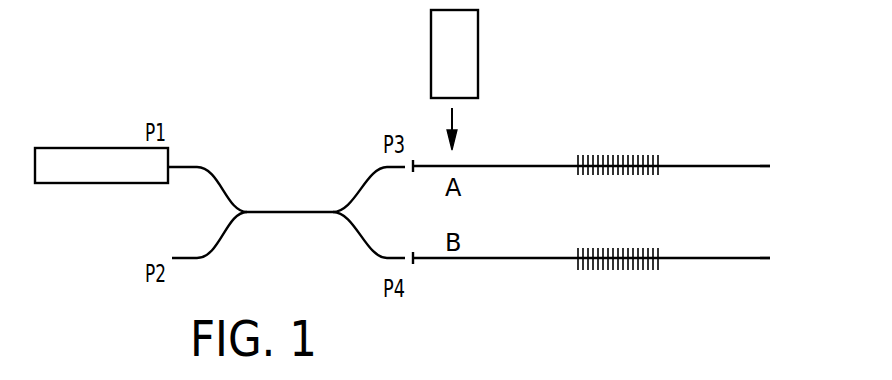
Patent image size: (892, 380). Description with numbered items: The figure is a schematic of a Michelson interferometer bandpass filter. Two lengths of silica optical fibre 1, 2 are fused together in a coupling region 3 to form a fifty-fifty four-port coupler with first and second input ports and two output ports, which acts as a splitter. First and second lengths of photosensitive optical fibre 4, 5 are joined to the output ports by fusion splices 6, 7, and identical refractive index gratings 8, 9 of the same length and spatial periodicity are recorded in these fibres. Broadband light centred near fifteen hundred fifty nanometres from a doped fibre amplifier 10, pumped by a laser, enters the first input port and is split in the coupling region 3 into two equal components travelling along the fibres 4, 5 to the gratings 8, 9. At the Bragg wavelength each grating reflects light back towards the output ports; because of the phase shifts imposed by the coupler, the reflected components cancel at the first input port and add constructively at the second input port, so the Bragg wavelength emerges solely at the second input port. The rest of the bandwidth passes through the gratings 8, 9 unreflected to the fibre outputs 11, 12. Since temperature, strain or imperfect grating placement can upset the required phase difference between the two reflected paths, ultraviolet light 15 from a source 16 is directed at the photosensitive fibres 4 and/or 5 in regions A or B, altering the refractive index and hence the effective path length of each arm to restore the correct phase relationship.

The silica optical fibre 1 is at (218, 173).
The silica optical fibre 2 is at (220, 245).
The coupling region 3 is at (290, 208).
The photosensitive optical fibre 4 is at (523, 168).
The photosensitive optical fibre 5 is at (515, 262).
The fusion splice 6 is at (414, 172).
The fusion splice 7 is at (414, 264).
The refractive index grating 8 is at (622, 177).
The refractive index grating 9 is at (632, 268).
The doped fibre amplifier 10 is at (80, 148).
The output of fibre 11 is at (764, 168).
The output of fibre 12 is at (764, 262).
The ultraviolet light 15 is at (465, 129).
The source 16 is at (478, 68).